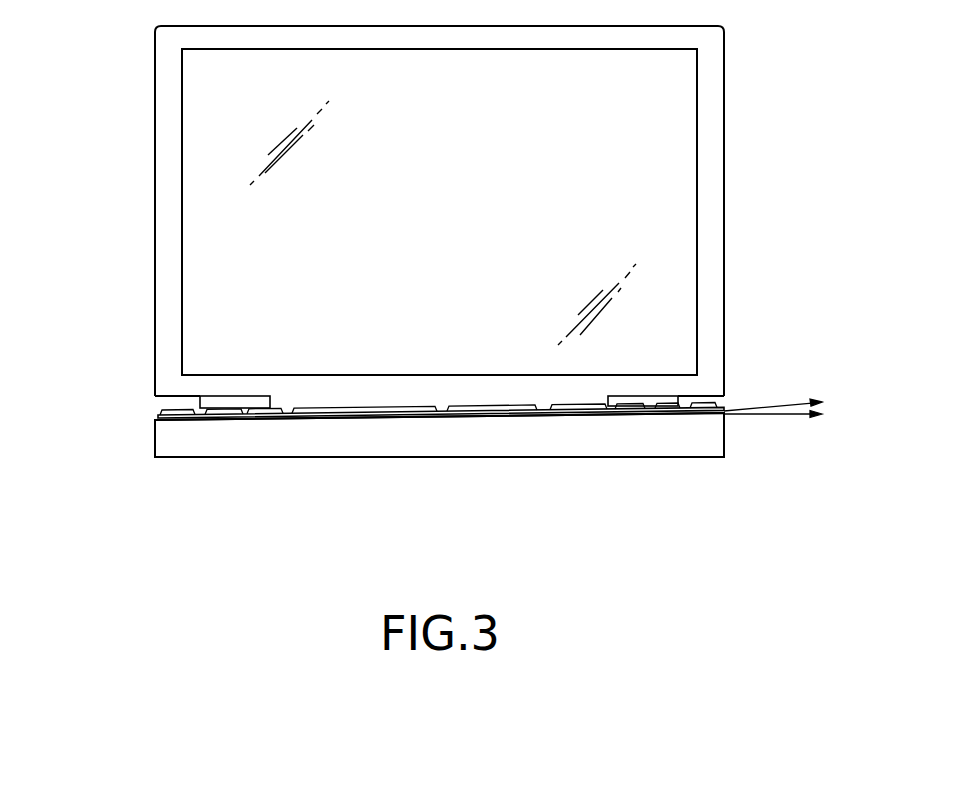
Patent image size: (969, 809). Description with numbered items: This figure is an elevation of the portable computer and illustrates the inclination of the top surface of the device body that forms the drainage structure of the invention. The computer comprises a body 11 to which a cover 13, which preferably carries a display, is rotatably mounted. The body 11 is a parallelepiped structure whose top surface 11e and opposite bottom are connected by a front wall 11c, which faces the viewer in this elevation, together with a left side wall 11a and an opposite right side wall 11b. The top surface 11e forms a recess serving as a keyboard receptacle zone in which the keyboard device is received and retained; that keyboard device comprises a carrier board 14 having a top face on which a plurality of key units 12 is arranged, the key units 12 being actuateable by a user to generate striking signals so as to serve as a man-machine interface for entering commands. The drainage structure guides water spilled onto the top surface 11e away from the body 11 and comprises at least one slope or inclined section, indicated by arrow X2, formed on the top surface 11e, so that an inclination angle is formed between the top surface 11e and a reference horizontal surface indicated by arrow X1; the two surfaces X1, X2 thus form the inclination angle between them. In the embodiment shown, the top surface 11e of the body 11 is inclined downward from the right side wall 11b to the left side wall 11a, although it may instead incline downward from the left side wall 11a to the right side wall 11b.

The body 11 is at (167, 435).
The left side wall 11a is at (155, 449).
The right side wall 11b is at (725, 447).
The front wall 11c is at (557, 443).
The top surface 11e is at (213, 423).
The key units 12 is at (177, 413).
The cover 13 is at (167, 137).
The carrier board 14 is at (158, 417).
The reference horizontal surface X1 is at (782, 417).
The inclined section X2 is at (793, 400).